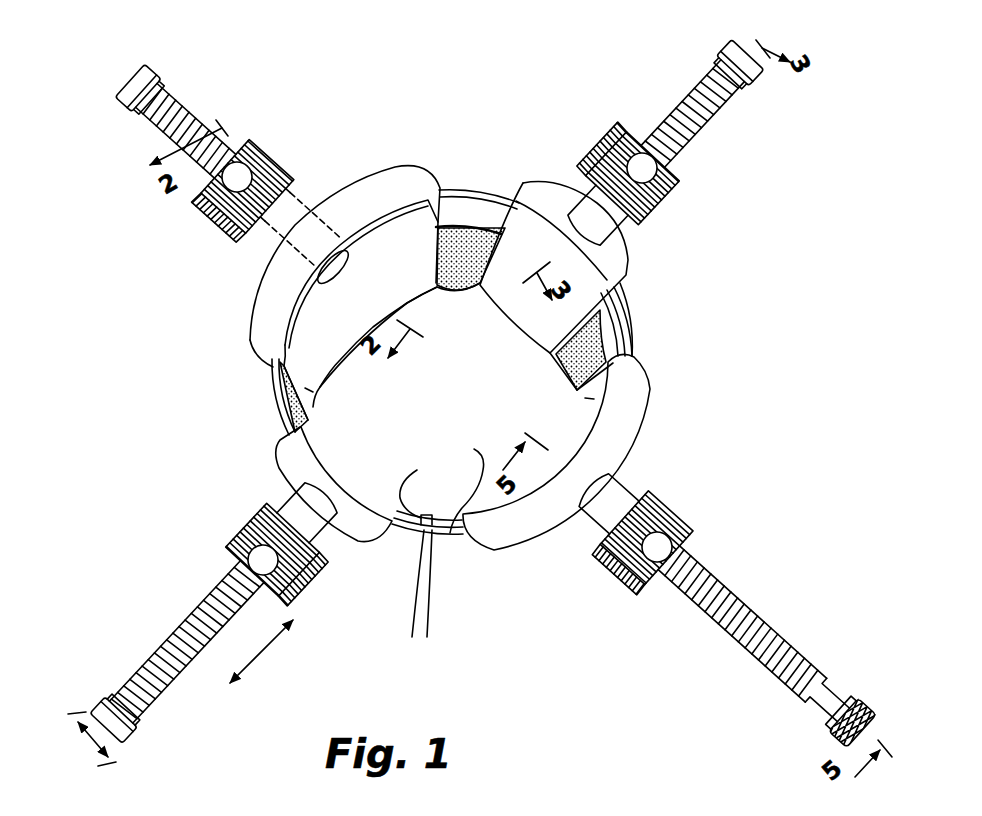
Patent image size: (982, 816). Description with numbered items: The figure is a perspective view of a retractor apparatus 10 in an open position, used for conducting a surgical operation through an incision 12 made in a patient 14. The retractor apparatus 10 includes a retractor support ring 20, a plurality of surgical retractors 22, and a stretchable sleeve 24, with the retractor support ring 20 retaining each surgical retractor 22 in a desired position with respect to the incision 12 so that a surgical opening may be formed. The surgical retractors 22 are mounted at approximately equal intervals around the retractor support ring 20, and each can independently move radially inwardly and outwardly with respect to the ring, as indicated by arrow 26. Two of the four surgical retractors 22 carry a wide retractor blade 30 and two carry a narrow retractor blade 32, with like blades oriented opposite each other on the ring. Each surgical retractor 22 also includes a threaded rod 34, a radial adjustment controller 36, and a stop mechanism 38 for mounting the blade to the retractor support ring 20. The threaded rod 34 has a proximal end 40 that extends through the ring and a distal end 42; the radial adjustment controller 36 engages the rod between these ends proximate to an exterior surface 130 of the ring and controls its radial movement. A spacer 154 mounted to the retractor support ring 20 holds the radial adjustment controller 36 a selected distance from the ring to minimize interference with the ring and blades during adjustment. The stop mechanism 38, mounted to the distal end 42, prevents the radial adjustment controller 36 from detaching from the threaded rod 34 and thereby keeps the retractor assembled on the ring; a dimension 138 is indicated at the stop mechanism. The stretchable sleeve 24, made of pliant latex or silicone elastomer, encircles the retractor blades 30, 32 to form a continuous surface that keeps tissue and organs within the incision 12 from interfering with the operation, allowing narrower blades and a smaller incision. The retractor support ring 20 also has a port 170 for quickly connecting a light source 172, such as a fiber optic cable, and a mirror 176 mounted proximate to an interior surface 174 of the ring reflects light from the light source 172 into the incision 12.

The retractor apparatus 10 is at (405, 100).
The incision 12 is at (464, 384).
The patient 14 is at (188, 392).
The retractor support ring 20 is at (470, 186).
The surgical retractor 22 is at (240, 291).
The stretchable sleeve 24 is at (450, 268).
The arrow 26 is at (263, 650).
The wide retractor blade 30 is at (310, 391).
The narrow retractor blade 32 is at (528, 316).
The threaded rod 34 is at (170, 96).
The radial adjustment controller 36 is at (218, 222).
The stop mechanism 38 is at (134, 82).
The proximal end 40 is at (351, 258).
The distal end 42 is at (140, 108).
The exterior surface 130 is at (632, 322).
The head thickness 138 is at (77, 728).
The spacer 154 is at (304, 190).
The port 170 is at (440, 545).
The light source 172 is at (412, 620).
The interior surface 174 is at (458, 481).
The mirror 176 is at (426, 494).